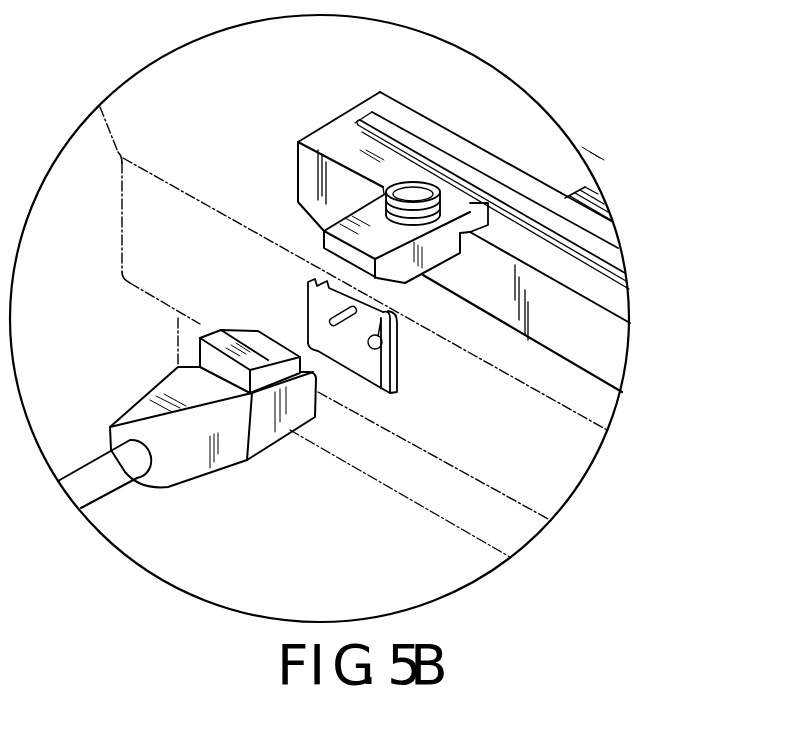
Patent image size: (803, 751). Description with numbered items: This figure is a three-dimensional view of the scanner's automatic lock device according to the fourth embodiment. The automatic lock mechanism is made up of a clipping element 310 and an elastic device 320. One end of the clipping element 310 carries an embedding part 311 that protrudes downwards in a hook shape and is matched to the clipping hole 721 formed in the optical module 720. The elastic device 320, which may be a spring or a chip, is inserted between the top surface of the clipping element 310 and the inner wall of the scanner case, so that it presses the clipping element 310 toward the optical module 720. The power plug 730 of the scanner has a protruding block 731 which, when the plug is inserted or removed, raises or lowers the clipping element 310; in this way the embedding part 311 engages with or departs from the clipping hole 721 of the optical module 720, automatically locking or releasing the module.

The clipping element 310 is at (363, 212).
The embedding part 311 is at (490, 227).
The elastic device 320 is at (424, 182).
The optical module 720 is at (604, 363).
The clipping hole 721 is at (490, 227).
The power plug 730 is at (198, 457).
The protruding block 731 is at (224, 352).